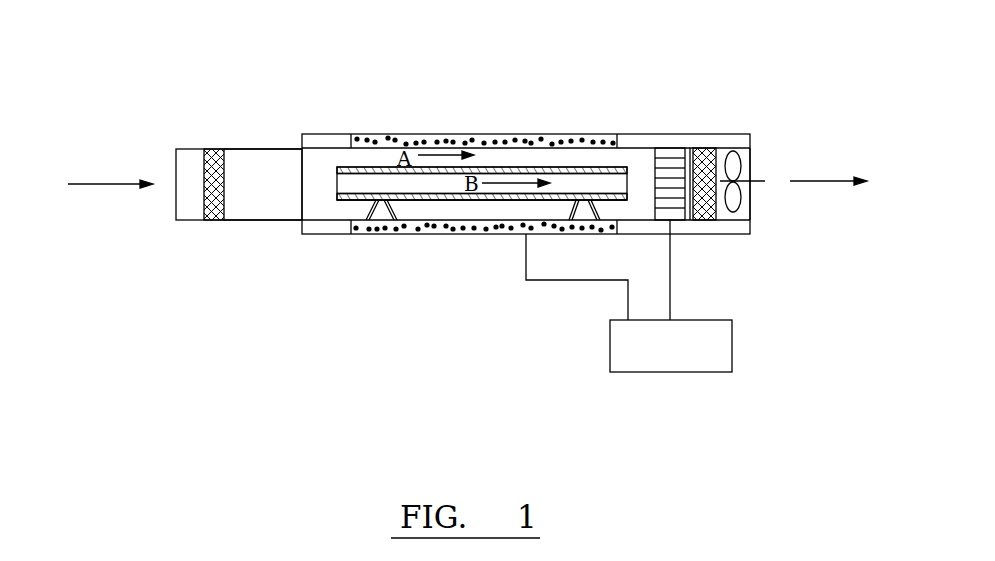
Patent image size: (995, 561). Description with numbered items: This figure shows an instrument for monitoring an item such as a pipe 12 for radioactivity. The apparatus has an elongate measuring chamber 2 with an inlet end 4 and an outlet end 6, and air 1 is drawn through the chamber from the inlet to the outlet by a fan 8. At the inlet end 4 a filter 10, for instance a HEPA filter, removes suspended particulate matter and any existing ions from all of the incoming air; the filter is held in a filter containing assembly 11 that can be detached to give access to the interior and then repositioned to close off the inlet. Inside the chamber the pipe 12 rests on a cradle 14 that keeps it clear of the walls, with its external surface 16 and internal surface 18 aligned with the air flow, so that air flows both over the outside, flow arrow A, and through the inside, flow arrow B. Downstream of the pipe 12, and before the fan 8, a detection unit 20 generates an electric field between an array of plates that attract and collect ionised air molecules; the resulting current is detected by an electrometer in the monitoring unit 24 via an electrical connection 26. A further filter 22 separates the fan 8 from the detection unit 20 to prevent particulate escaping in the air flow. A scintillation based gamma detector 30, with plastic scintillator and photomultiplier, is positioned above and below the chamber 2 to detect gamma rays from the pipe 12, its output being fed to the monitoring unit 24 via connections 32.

The air 1 is at (100, 184).
The measuring chamber 2 is at (527, 107).
The inlet end 4 is at (165, 128).
The outlet end 6 is at (772, 135).
The fan 8 is at (735, 193).
The filter 10 is at (208, 220).
The filter containing assembly 11 is at (259, 125).
The pipe 12 is at (546, 165).
The cradle 14 is at (386, 222).
The external surface 16 is at (385, 166).
The internal surface 18 is at (417, 200).
The detection unit 20 is at (676, 107).
The filter 22 is at (707, 148).
The monitoring unit 24 is at (677, 357).
The electrical connection 26 is at (672, 270).
The scintillation based gamma detector 30 is at (454, 120).
The connections 32 is at (616, 290).